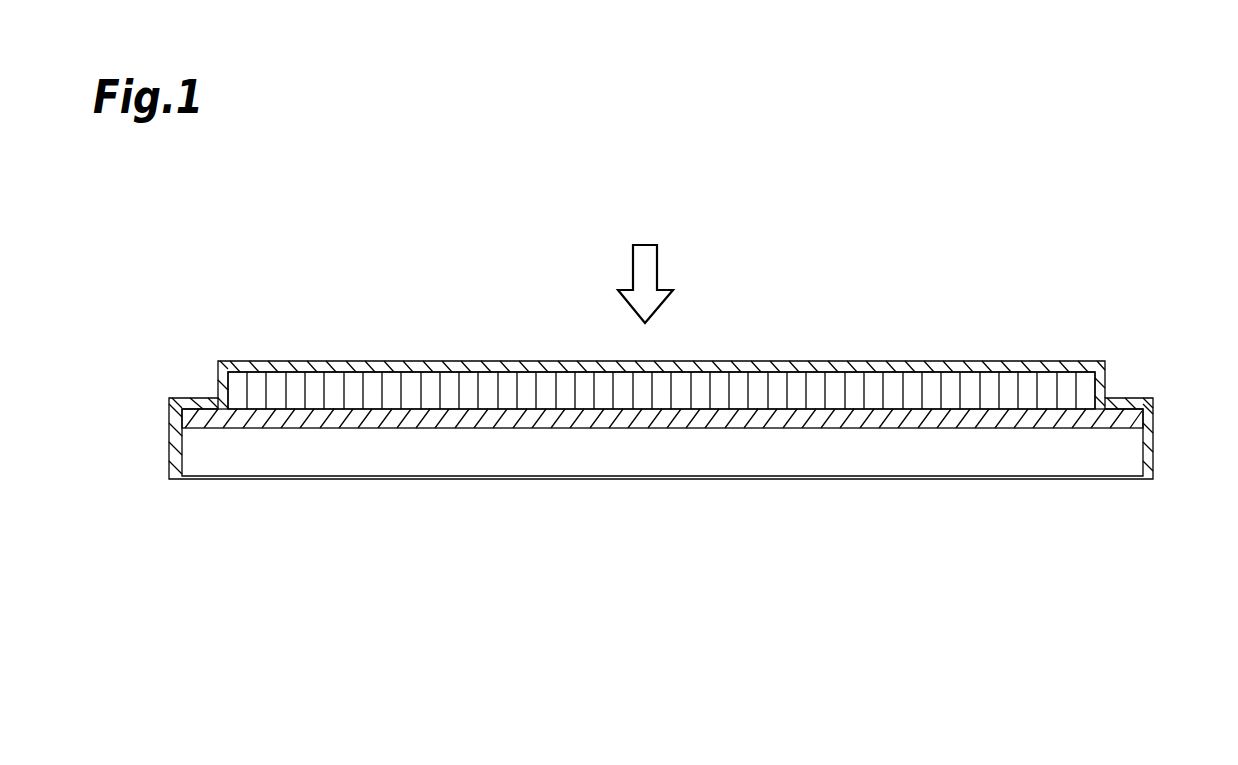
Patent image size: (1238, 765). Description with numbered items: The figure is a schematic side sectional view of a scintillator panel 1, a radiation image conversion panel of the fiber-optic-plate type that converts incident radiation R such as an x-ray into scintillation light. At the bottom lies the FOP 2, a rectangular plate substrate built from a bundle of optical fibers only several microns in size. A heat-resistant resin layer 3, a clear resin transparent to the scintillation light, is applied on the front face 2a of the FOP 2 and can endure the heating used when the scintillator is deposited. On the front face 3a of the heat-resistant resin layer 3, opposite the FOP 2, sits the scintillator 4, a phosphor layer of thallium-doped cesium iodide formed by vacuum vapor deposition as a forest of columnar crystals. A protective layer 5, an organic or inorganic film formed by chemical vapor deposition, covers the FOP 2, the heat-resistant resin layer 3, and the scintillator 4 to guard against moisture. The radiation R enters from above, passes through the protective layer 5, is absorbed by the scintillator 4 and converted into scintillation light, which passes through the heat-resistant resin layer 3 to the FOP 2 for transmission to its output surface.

The scintillator panel 1 is at (1113, 289).
The FOP 2 is at (885, 470).
The front face of the FOP 2a is at (1078, 428).
The heat-resistant resin layer 3 is at (780, 417).
The front face of the heat-resistant resin layer 3a is at (988, 404).
The scintillator 4 is at (493, 392).
The protective layer 5 is at (345, 367).
The radiation R is at (648, 262).